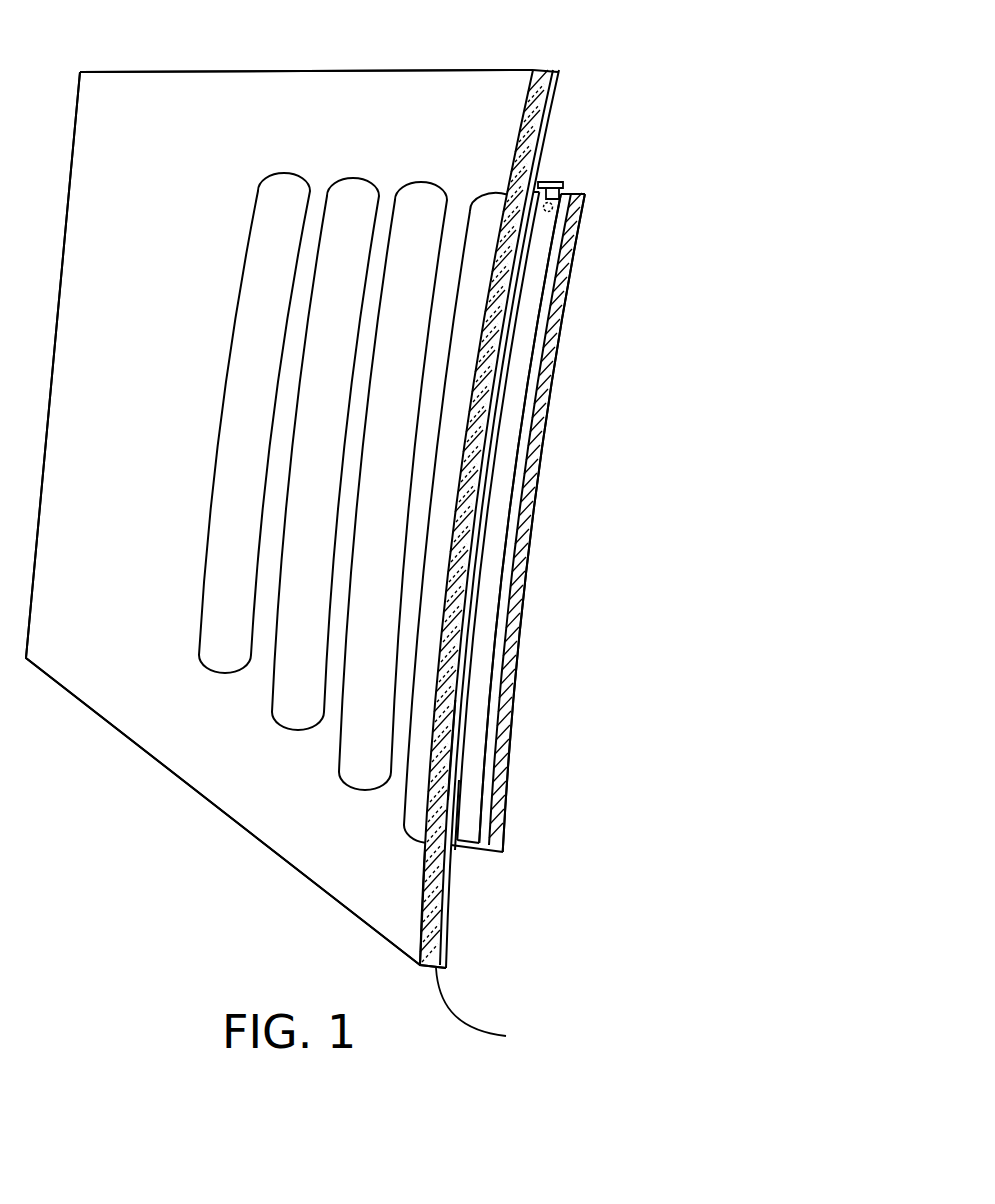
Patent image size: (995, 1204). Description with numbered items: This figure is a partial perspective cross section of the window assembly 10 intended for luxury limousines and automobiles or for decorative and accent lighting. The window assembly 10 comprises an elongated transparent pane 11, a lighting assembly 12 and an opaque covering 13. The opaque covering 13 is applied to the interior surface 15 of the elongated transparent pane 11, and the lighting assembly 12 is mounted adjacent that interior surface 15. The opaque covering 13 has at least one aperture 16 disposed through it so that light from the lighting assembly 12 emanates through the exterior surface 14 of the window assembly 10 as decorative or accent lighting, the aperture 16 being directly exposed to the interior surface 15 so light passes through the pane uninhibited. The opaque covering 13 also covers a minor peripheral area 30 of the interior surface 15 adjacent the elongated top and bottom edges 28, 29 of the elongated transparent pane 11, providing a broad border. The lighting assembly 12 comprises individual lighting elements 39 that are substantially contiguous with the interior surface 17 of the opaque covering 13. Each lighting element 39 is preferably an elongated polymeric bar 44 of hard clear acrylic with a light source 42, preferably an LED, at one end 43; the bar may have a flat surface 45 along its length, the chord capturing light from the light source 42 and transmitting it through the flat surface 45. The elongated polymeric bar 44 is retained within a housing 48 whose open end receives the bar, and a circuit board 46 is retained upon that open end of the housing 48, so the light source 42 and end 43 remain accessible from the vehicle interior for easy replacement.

The window assembly 10 is at (795, 112).
The elongated transparent pane 11 is at (500, 307).
The lighting assembly 12 is at (575, 635).
The opaque covering 13 is at (552, 102).
The exterior surface 14 is at (520, 128).
The interior surface 15 is at (450, 790).
The aperture 16 is at (448, 818).
The interior surface 17 is at (448, 936).
The top edge 28 is at (543, 70).
The bottom edge 29 is at (494, 1013).
The minor peripheral area 30 is at (559, 917).
The lighting element 39 is at (632, 591).
The light source 42 is at (553, 206).
The end 43 is at (563, 196).
The elongated polymeric bar 44 is at (508, 483).
The flat surface 45 is at (463, 723).
The circuit board 46 is at (553, 185).
The housing 48 is at (553, 360).